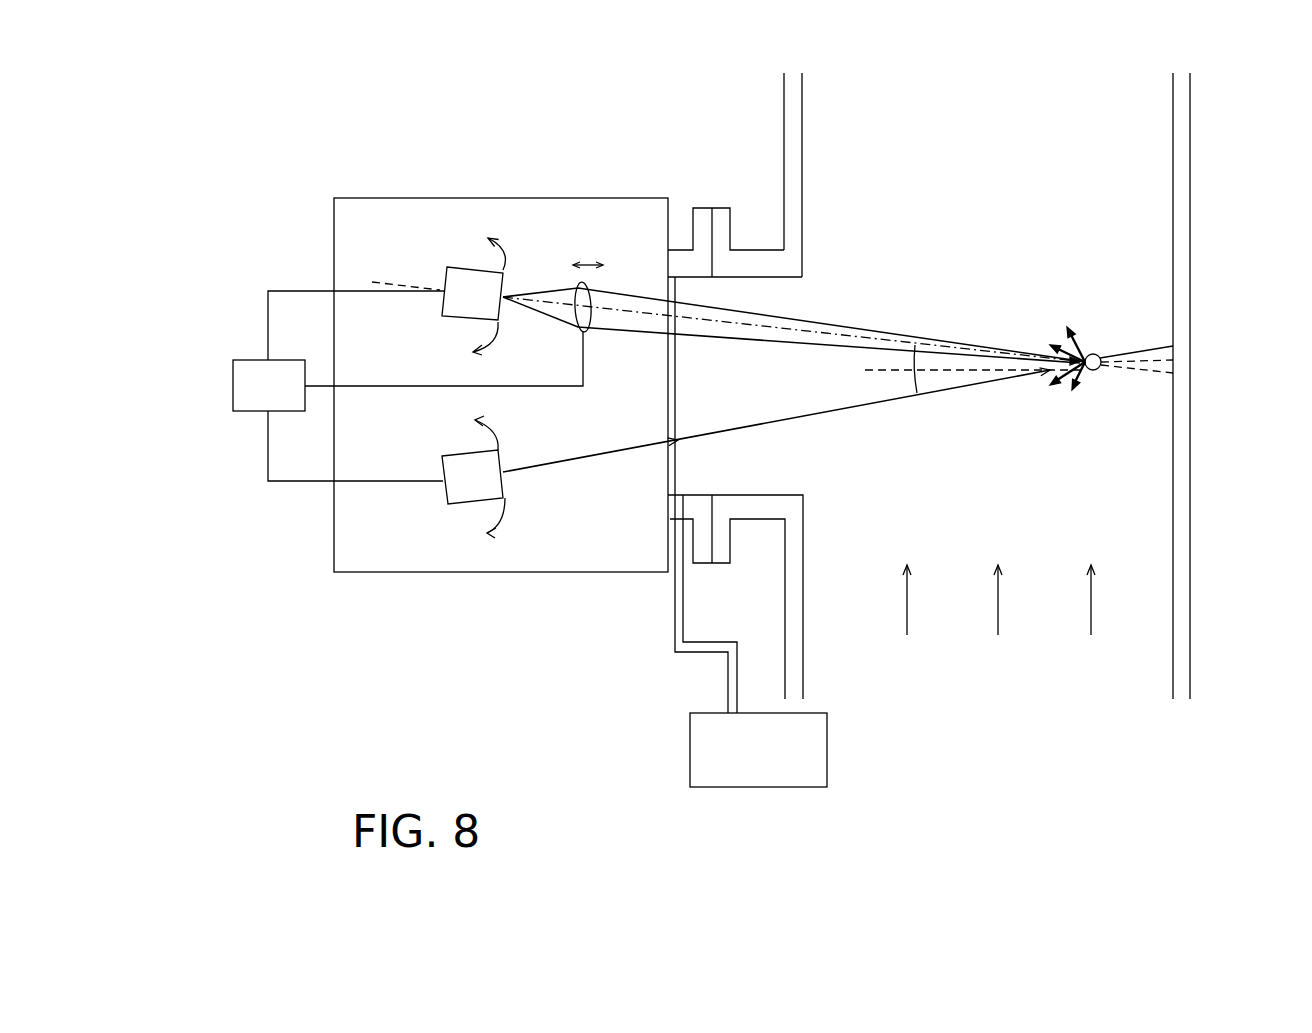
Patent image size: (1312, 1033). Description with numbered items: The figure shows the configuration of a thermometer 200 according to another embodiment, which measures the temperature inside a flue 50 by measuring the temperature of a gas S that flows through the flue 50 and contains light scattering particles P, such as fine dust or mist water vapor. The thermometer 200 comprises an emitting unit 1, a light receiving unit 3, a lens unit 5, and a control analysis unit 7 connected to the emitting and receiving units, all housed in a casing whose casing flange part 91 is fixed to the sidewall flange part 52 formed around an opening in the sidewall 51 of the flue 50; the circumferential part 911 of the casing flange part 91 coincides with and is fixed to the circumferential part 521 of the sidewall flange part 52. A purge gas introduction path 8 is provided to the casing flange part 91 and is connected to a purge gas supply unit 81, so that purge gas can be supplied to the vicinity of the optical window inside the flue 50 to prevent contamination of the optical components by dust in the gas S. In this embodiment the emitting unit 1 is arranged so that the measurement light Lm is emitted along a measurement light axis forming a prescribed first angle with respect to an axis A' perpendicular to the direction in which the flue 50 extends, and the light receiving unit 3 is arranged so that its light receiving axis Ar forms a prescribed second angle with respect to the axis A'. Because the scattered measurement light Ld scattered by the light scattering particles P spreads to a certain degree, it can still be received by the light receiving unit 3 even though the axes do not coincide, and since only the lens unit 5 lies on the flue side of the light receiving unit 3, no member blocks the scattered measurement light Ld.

The thermometer 200 is at (367, 167).
The emitting unit 1 is at (460, 505).
The light receiving unit 3 is at (467, 267).
The lens unit 5 is at (588, 283).
The control analysis unit 7 is at (233, 380).
The purge gas introduction path 8 is at (675, 632).
The purge gas supply unit 81 is at (690, 748).
The flue 50 is at (1030, 129).
The sidewall 51 is at (795, 83).
The sidewall flange part 52 is at (784, 193).
The circumferential part of the sidewall flange part 521 is at (722, 560).
The casing flange part 91 is at (711, 193).
The circumferential part of the casing flange part 911 is at (700, 565).
The light scattering particles P is at (1107, 347).
The light receiving axis Ar is at (832, 335).
The measurement light Lm is at (853, 410).
The scattered measurement light Ld is at (1072, 398).
The axis perpendicular to the flue direction A' is at (1168, 337).
The gas S is at (1006, 600).